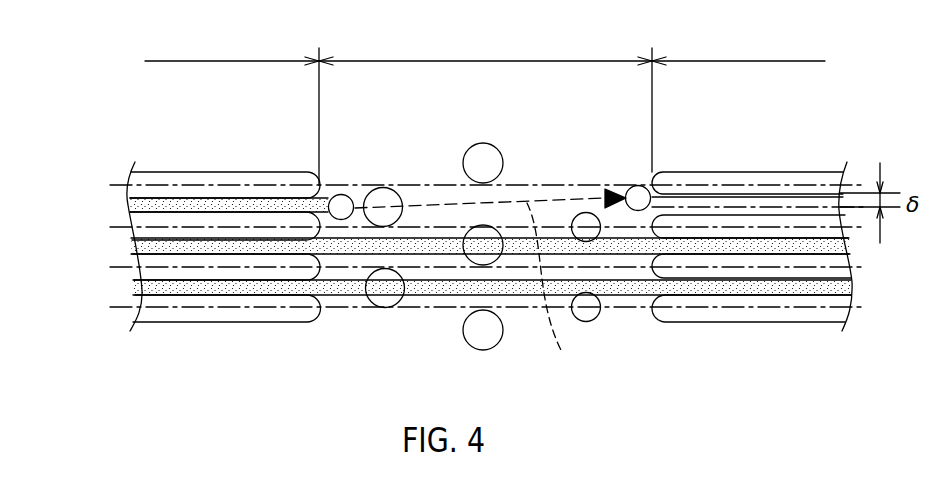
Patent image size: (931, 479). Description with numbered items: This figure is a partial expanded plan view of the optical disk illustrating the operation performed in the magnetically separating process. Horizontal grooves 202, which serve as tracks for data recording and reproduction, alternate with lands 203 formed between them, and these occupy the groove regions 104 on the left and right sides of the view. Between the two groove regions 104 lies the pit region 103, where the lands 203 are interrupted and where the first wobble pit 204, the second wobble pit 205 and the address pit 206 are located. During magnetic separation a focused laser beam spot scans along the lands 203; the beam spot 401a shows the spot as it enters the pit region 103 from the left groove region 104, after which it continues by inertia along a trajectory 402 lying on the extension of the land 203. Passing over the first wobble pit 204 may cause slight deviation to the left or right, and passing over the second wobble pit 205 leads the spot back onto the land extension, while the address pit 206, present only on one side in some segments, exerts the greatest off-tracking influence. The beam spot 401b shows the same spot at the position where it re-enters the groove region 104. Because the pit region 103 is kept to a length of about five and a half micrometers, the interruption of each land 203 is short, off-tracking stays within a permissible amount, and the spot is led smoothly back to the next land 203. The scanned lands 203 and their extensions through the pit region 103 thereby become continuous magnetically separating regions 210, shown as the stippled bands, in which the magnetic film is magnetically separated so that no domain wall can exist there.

The pit region 103 is at (492, 45).
The groove region 104 is at (485, 104).
The groove 202 is at (118, 221).
The land 203 is at (795, 207).
The first wobble pit 204 is at (388, 187).
The second wobble pit 205 is at (474, 264).
The address pit 206 is at (583, 212).
The magnetically separating region 210 is at (208, 208).
The beam spot 401a is at (341, 194).
The beam spot 401b is at (636, 185).
The trajectory 402 is at (490, 284).